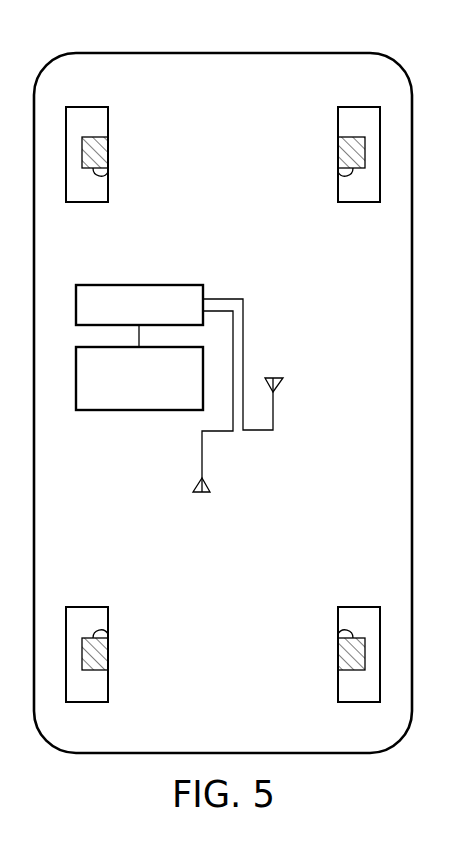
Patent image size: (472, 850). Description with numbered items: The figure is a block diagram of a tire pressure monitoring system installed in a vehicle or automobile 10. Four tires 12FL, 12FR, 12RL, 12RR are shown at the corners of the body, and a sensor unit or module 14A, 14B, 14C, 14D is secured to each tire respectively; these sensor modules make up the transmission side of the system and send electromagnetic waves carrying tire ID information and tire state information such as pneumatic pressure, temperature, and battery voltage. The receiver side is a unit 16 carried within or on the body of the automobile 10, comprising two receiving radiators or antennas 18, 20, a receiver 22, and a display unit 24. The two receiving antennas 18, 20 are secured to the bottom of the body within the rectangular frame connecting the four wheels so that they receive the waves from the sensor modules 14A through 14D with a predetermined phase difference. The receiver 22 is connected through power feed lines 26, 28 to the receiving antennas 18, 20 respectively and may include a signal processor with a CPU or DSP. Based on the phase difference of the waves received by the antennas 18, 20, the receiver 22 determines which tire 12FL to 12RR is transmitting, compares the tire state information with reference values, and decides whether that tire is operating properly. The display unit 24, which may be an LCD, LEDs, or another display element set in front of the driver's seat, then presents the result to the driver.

The vehicle 10 is at (122, 50).
The front left tire 12FL is at (114, 123).
The front right tire 12FR is at (334, 123).
The rear left tire 12RL is at (114, 687).
The rear right tire 12RR is at (334, 687).
The sensor module 14A is at (108, 180).
The sensor module 14B is at (338, 178).
The sensor module 14C is at (108, 630).
The sensor module 14D is at (338, 630).
The receiver-side unit 16 is at (216, 390).
The receiving antenna 18 is at (197, 494).
The receiving antenna 20 is at (276, 377).
The receiver 22 is at (128, 284).
The display unit 24 is at (128, 410).
The power feed line 26 is at (200, 456).
The power feed line 28 is at (262, 431).